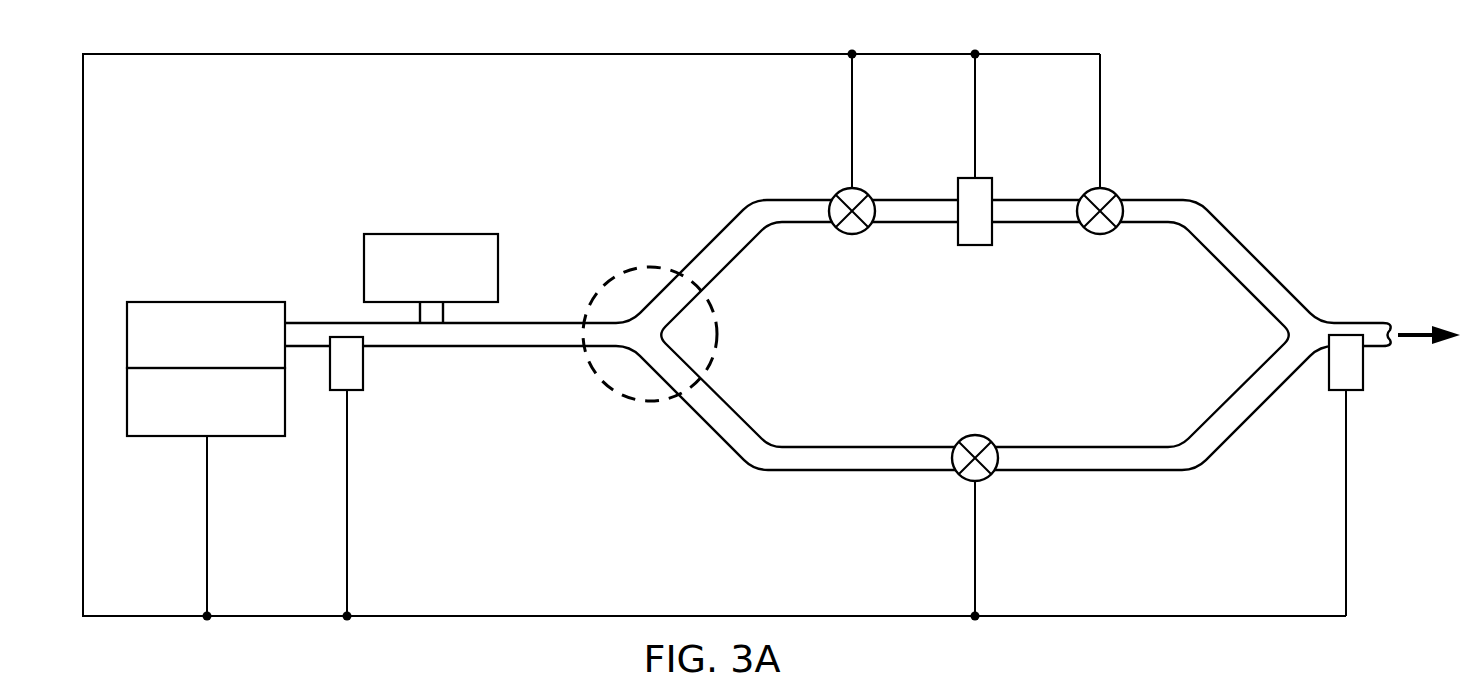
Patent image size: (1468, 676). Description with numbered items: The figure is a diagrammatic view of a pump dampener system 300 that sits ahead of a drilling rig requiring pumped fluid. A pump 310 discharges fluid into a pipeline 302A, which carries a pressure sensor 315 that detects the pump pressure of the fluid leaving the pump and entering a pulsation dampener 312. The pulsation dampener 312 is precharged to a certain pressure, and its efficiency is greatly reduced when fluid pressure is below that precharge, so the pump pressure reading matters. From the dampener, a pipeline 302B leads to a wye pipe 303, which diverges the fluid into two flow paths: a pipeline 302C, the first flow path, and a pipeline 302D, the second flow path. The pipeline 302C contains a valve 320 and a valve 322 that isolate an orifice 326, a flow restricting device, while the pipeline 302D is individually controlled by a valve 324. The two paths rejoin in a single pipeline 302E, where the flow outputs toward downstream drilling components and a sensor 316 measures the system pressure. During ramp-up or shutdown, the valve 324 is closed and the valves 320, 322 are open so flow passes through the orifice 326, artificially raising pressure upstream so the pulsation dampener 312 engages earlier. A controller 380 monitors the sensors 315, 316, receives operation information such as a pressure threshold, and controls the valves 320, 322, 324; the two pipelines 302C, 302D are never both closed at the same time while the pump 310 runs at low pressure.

The pump dampener system 300 is at (1314, 151).
The pump 310 is at (197, 301).
The controller 380 is at (168, 438).
The pipeline 302A is at (320, 323).
The pipeline 302B is at (555, 322).
The pipeline 302C is at (718, 276).
The pipeline 302D is at (745, 388).
The pipeline 302E is at (1352, 323).
The wye pipe 303 is at (642, 266).
The pulsation dampener 312 is at (432, 234).
The pressure sensor 315 is at (365, 370).
The sensor 316 is at (1365, 370).
The valve 320 is at (853, 234).
The valve 322 is at (1103, 234).
The valve 324 is at (980, 435).
The orifice 326 is at (995, 235).